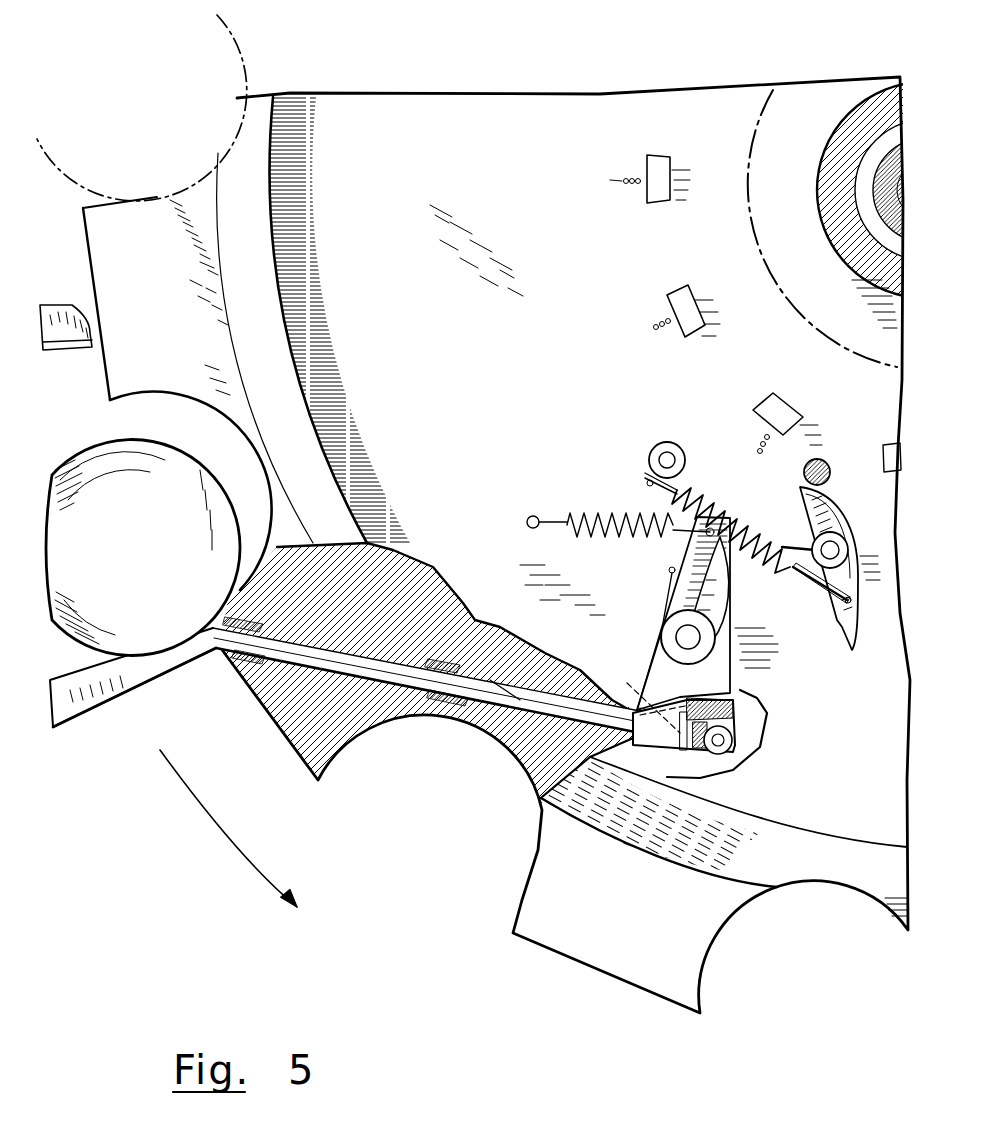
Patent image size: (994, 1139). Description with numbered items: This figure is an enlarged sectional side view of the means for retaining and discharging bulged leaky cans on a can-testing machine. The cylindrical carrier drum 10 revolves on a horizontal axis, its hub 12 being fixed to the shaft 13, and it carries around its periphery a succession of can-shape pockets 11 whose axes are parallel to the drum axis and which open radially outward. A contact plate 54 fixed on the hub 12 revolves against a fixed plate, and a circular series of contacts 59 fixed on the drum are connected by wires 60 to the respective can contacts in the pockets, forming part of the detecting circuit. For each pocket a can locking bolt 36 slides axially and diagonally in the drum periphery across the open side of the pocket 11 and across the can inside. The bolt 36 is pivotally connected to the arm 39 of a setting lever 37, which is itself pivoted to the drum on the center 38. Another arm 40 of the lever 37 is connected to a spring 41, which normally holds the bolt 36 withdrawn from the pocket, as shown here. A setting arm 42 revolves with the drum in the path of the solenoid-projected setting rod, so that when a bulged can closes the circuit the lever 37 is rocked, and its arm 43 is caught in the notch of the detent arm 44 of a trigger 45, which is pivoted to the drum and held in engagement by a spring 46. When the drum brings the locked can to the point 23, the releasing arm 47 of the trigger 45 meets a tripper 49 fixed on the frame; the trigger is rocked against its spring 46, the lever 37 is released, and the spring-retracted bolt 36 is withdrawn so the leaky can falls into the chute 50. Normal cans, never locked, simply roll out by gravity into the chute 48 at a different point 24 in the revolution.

The cylindrical carrier drum 10 is at (473, 514).
The can-shape pockets 11 is at (430, 676).
The hub 12 is at (822, 230).
The shaft 13 is at (847, 260).
The point 23 is at (384, 673).
The point 24 is at (138, 298).
The can locking bolt 36 is at (500, 690).
The setting lever 37 is at (712, 625).
The center 38 is at (693, 640).
The arm 39 is at (750, 690).
The arm 40 is at (693, 550).
The spring 41 is at (600, 537).
The setting arm 42 is at (640, 687).
The arm 43 is at (717, 565).
The detent arm 44 is at (857, 620).
The trigger 45 is at (853, 553).
The spring 46 is at (713, 520).
The releasing arm 47 is at (827, 507).
The chute 48 is at (50, 312).
The tripper 49 is at (830, 467).
The chute 50 is at (92, 693).
The contact plate 54 is at (743, 223).
The contacts 59 is at (762, 390).
The wires 60 is at (640, 330).